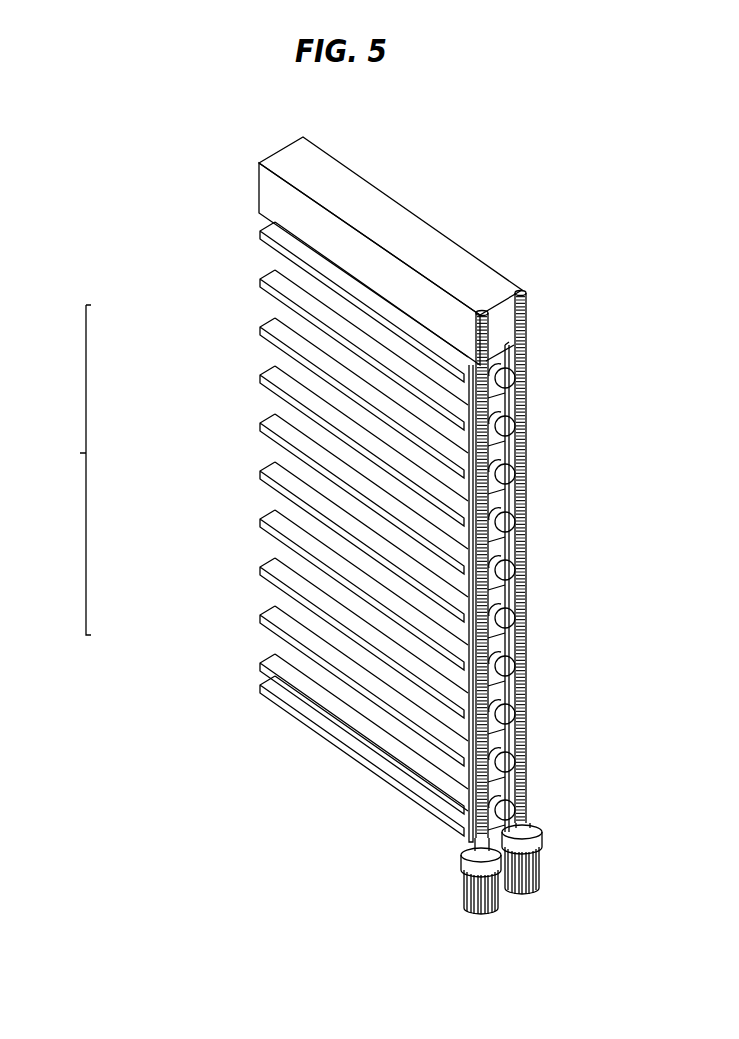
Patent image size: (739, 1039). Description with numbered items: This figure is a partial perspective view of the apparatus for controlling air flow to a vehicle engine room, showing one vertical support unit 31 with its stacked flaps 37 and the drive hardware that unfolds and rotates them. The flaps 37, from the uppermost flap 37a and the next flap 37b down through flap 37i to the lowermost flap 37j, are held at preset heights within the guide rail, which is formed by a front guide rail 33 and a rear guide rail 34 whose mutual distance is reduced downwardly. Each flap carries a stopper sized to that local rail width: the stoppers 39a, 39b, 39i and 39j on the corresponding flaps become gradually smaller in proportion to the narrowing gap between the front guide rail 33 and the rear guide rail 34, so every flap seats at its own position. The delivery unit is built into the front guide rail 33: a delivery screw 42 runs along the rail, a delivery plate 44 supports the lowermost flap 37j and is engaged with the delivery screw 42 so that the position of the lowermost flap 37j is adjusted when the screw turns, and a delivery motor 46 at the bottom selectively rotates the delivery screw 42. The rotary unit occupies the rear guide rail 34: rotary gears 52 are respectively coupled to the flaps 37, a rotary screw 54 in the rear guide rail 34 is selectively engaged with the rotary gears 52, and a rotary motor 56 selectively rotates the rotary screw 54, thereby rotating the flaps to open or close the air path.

The tray unit 31 is at (466, 168).
The front guide rail 33 is at (470, 813).
The rear guide rail 34 is at (510, 783).
The flaps 37 is at (261, 570).
The flap 37a is at (270, 247).
The flap 37b is at (273, 294).
The flap 37i is at (262, 617).
The lowermost flap 37j is at (265, 672).
The stopper 39a is at (521, 358).
The stopper 39b is at (527, 412).
The stopper 39i is at (523, 732).
The stopper 39j is at (520, 803).
The delivery screw 42 is at (484, 642).
The delivery plate 44 is at (506, 890).
The delivery motor 46 is at (482, 914).
The rotary gears 52 is at (513, 378).
The rotary screw 54 is at (523, 692).
The rotary motor 56 is at (536, 889).